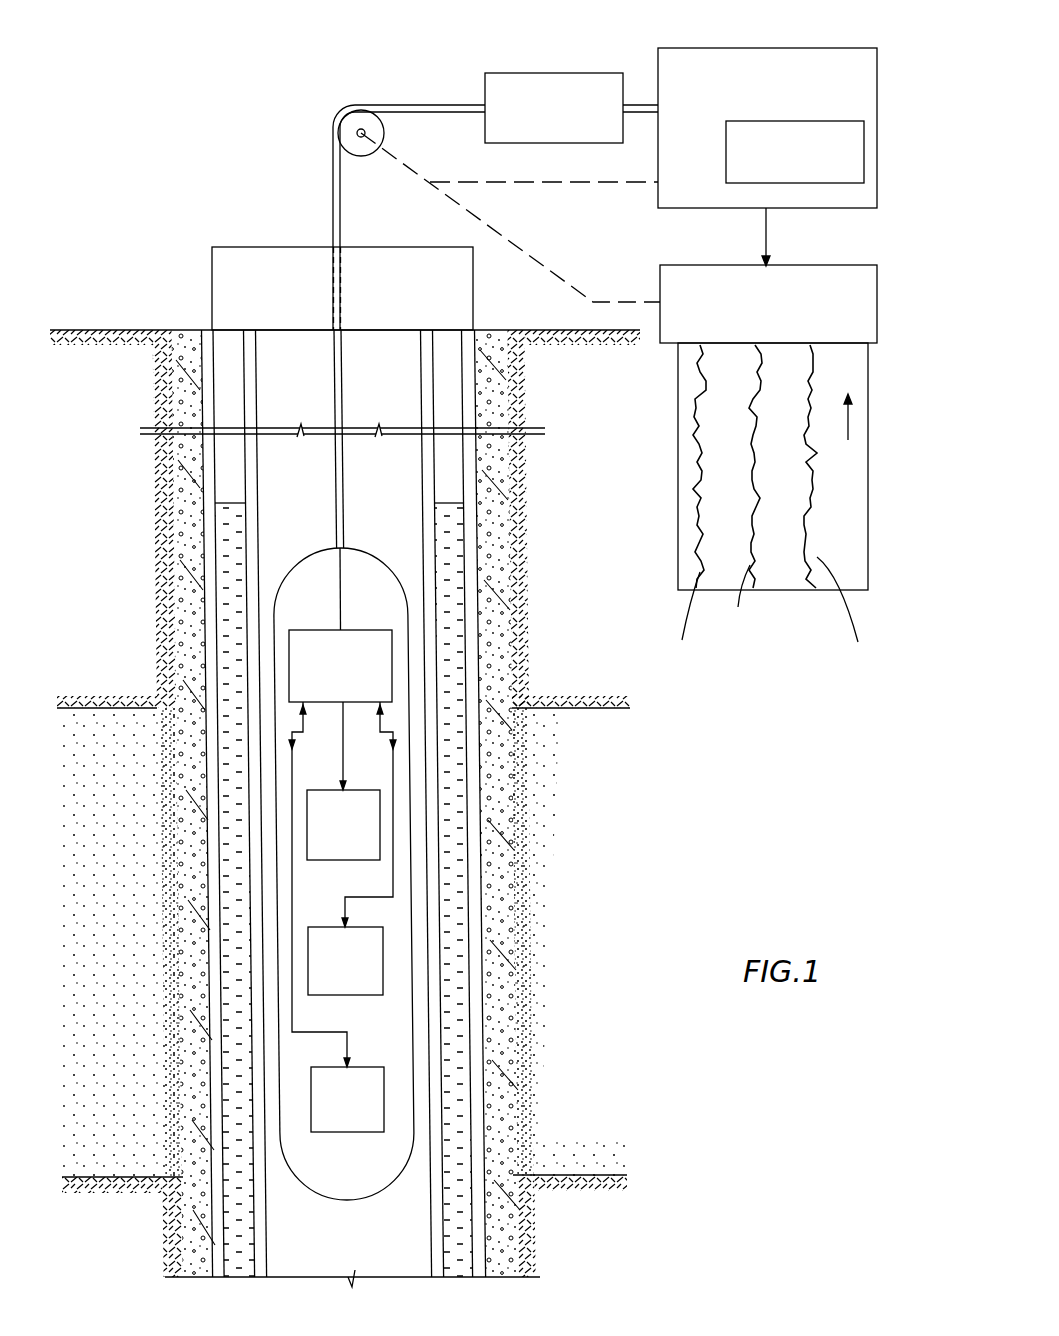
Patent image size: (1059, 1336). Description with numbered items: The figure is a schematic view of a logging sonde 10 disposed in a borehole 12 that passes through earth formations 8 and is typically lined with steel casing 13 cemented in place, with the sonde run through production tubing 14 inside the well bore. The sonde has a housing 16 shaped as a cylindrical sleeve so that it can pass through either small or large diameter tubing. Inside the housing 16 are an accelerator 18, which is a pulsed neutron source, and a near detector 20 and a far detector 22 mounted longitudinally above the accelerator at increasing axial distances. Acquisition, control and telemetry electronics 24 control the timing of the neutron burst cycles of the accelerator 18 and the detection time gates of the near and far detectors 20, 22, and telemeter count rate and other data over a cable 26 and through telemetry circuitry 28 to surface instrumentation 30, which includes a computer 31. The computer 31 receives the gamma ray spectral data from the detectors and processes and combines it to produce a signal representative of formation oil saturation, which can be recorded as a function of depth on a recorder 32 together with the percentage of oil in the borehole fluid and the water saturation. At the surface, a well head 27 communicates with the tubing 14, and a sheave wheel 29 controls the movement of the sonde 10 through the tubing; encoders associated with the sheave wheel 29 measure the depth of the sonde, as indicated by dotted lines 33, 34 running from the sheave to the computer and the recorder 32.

The formations 8 is at (583, 980).
The logging sonde 10 is at (400, 566).
The borehole 12 is at (216, 506).
The steel casing 13 is at (204, 548).
The tubing 14 is at (447, 1163).
The housing 16 is at (278, 1083).
The accelerator 18 is at (384, 1088).
The near detector 20 is at (383, 956).
The far detector 22 is at (307, 823).
The electronics 24 is at (289, 660).
The cable 26 is at (350, 105).
The well head 27 is at (256, 247).
The telemetry circuitry 28 is at (558, 73).
The sheave wheel 29 is at (342, 134).
The surface instrumentation 30 is at (840, 48).
The computer 31 is at (878, 152).
The recorder 32 is at (878, 295).
The dotted line 33 is at (587, 183).
The dotted line 34 is at (566, 282).